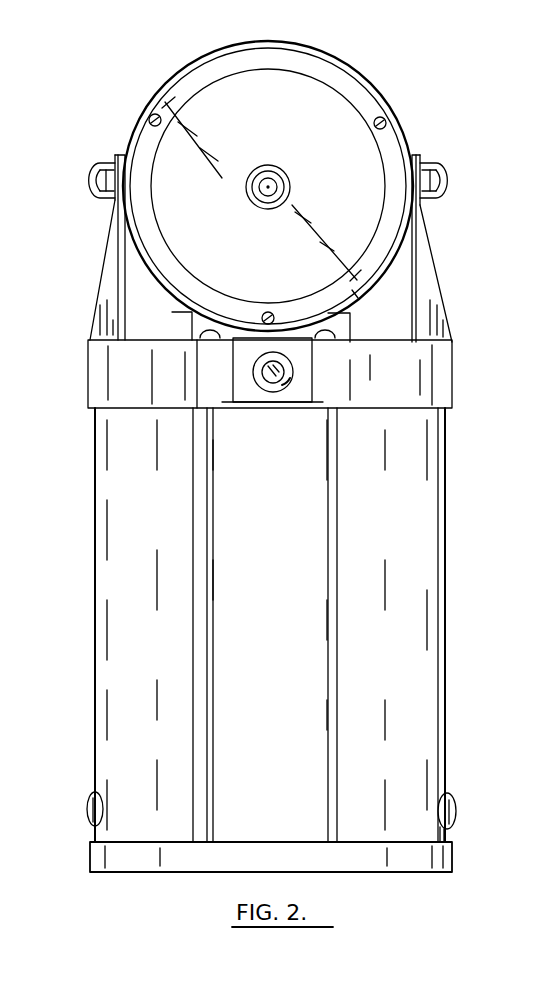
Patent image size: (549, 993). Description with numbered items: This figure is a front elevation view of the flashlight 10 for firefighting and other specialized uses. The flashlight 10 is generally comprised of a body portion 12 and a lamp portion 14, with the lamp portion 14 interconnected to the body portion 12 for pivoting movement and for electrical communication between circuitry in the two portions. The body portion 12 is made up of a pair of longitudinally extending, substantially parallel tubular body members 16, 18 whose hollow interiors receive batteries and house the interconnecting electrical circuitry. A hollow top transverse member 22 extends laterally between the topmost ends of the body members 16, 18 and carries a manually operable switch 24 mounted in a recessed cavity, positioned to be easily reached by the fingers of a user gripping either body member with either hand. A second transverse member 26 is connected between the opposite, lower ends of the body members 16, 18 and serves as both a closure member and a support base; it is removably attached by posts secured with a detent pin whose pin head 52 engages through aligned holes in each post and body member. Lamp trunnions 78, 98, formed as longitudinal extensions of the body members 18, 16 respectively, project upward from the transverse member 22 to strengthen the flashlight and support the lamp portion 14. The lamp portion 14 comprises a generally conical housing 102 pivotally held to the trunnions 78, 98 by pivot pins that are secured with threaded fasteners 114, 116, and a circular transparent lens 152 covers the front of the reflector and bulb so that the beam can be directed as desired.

The flashlight 10 is at (397, 33).
The body portion 12 is at (455, 290).
The lamp portion 14 is at (197, 52).
The body member 16 is at (193, 614).
The body member 18 is at (342, 600).
The top transverse member 22 is at (337, 406).
The manually operable switch 24 is at (283, 375).
The second transverse member 26 is at (252, 850).
The pin head 52 is at (87, 812).
The lamp trunnion 78 is at (413, 257).
The second lamp trunnion 98 is at (119, 265).
The conical housing 102 is at (315, 44).
The threaded fastener 114 is at (112, 168).
The threaded fastener 116 is at (440, 172).
The circular transparent lens 152 is at (350, 118).